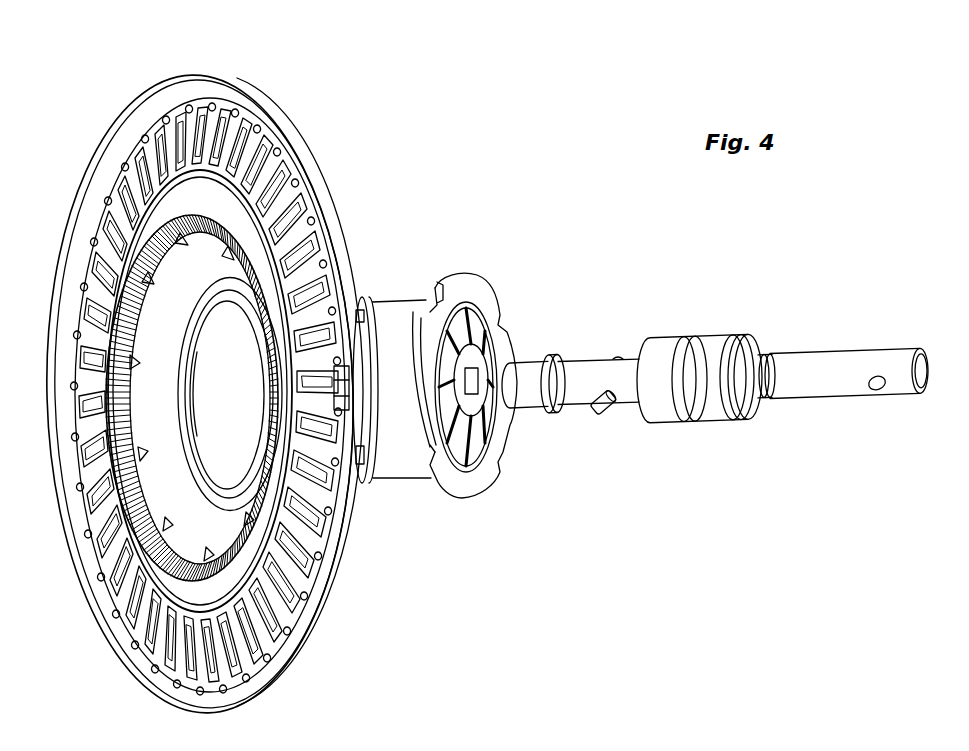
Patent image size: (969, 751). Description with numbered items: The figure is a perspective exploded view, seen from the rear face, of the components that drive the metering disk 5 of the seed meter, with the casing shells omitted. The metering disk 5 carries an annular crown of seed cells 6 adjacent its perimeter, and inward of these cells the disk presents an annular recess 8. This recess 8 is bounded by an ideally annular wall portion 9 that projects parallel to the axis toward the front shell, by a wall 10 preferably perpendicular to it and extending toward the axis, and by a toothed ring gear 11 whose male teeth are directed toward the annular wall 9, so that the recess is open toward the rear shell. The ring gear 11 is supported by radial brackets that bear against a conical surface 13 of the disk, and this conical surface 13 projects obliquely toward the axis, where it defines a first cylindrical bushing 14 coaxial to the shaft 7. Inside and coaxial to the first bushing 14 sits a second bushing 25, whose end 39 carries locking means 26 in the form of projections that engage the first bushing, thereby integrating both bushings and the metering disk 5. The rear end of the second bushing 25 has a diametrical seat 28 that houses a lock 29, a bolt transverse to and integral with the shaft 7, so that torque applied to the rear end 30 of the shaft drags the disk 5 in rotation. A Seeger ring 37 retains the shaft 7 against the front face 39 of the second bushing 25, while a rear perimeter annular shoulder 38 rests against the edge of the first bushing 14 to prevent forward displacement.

The metering disk 5 is at (319, 142).
The wall 10 is at (188, 198).
The toothed ring gear 11 is at (275, 508).
The annular wall portion 9 is at (278, 543).
The annular recess 8 is at (227, 581).
The end of the second bushing 39 is at (182, 520).
The seed cells 6 is at (214, 280).
The conical surface 13 is at (211, 281).
The first cylindrical bushing 14 is at (216, 409).
The locking means 26 is at (360, 306).
The rear perimeter annular shoulder 38 is at (492, 298).
The second bushing 25 is at (487, 270).
The seat 28 is at (455, 445).
The shaft 7 is at (826, 346).
The Seeger ring 37 is at (565, 352).
The rear end of the shaft 30 is at (894, 356).
The lock 29 is at (604, 411).